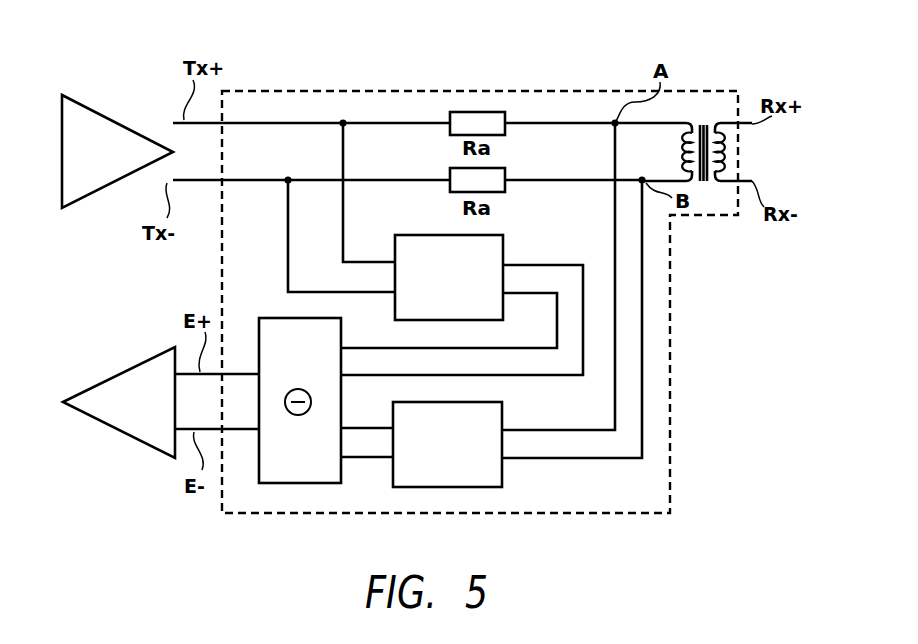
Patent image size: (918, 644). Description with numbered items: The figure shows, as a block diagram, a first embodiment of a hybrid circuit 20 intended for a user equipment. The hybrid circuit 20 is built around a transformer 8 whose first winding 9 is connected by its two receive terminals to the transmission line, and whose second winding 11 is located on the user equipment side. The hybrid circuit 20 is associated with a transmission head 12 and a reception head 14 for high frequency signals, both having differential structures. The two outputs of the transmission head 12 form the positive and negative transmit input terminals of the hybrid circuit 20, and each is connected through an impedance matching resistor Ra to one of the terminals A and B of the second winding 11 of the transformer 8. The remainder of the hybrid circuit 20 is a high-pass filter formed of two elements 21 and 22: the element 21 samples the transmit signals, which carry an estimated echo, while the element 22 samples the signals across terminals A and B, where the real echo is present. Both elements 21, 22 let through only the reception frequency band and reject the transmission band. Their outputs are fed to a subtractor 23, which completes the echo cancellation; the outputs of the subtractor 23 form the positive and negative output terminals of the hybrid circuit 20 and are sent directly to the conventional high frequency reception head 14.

The transformer 8 is at (697, 115).
The first winding 9 is at (730, 147).
The second winding 11 is at (682, 148).
The transmission head 12 is at (86, 102).
The reception head 14 is at (102, 378).
The hybrid circuit 20 is at (568, 84).
The high-pass filter element 21 is at (503, 236).
The high-pass filter element 22 is at (504, 418).
The subtractor 23 is at (341, 390).